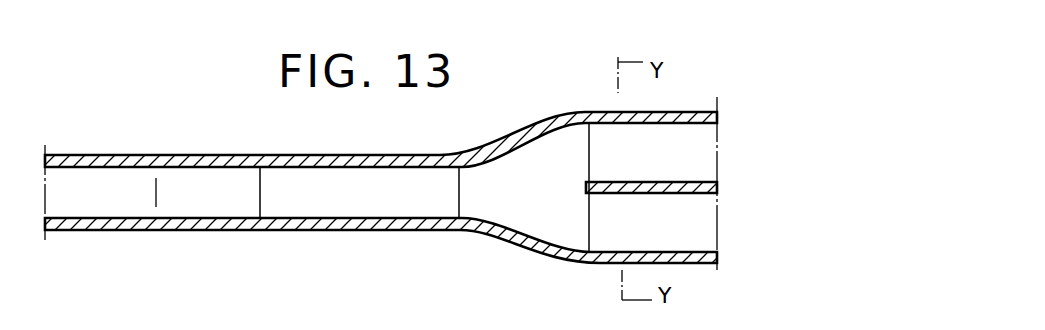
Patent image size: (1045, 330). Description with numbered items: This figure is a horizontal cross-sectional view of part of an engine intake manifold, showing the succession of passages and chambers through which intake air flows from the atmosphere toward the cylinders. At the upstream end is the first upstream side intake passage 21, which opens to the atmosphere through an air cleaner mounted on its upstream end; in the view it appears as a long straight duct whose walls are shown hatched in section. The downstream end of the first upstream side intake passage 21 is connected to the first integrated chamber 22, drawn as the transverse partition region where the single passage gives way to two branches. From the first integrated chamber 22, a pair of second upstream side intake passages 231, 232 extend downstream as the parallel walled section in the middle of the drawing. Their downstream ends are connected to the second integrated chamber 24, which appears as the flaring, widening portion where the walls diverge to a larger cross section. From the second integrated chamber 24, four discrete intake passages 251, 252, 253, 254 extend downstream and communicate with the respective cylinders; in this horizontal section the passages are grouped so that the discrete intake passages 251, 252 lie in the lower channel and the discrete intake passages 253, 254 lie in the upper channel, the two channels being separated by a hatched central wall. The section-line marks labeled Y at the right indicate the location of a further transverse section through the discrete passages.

The first upstream side intake passage 21 is at (120, 203).
The first integrated chamber 22 is at (233, 183).
The second upstream side intake passage 231 is at (381, 243).
The second upstream side intake passage 232 is at (398, 205).
The second integrated chamber 24 is at (522, 168).
The discrete intake passage 251 is at (715, 222).
The discrete intake passage 252 is at (702, 234).
The discrete intake passage 253 is at (714, 152).
The discrete intake passage 254 is at (700, 153).